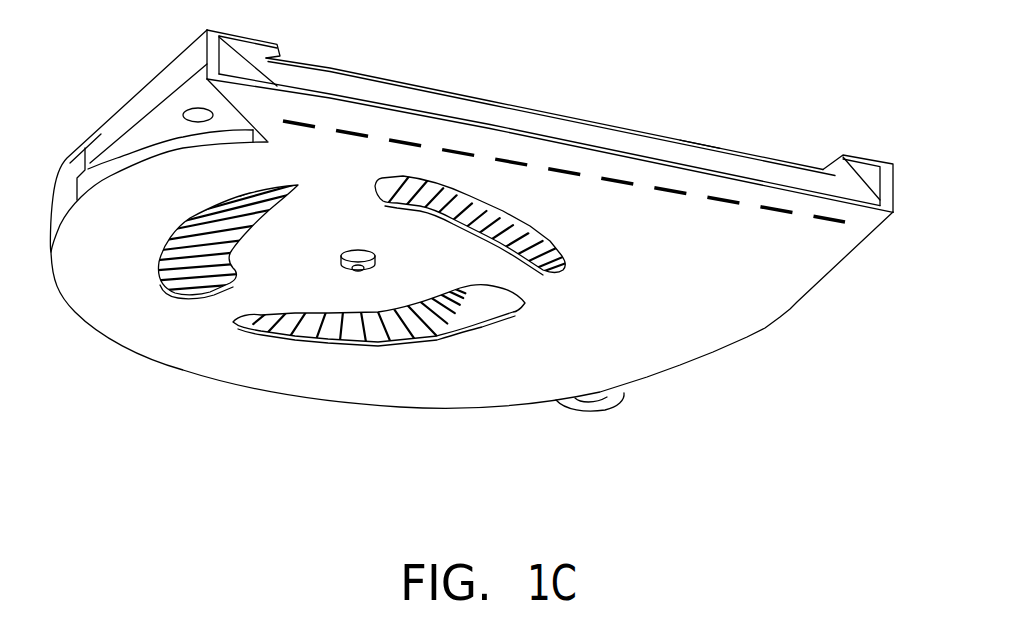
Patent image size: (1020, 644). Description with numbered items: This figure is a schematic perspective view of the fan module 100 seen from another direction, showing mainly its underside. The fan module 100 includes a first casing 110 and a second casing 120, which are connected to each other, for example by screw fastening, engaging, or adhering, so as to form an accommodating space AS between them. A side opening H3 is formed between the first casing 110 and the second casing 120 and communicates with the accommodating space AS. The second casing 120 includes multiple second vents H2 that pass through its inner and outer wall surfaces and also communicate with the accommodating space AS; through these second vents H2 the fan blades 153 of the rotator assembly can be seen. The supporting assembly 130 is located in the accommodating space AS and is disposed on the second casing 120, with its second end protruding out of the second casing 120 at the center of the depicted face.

The fan module 100 is at (471, 265).
The first casing 110 is at (853, 167).
The second casing 120 is at (790, 272).
The supporting assembly 130 is at (343, 274).
The fan blades 153 is at (486, 199).
The second vents H2 is at (550, 276).
The side opening H3 is at (702, 145).
The accommodating space AS is at (632, 145).